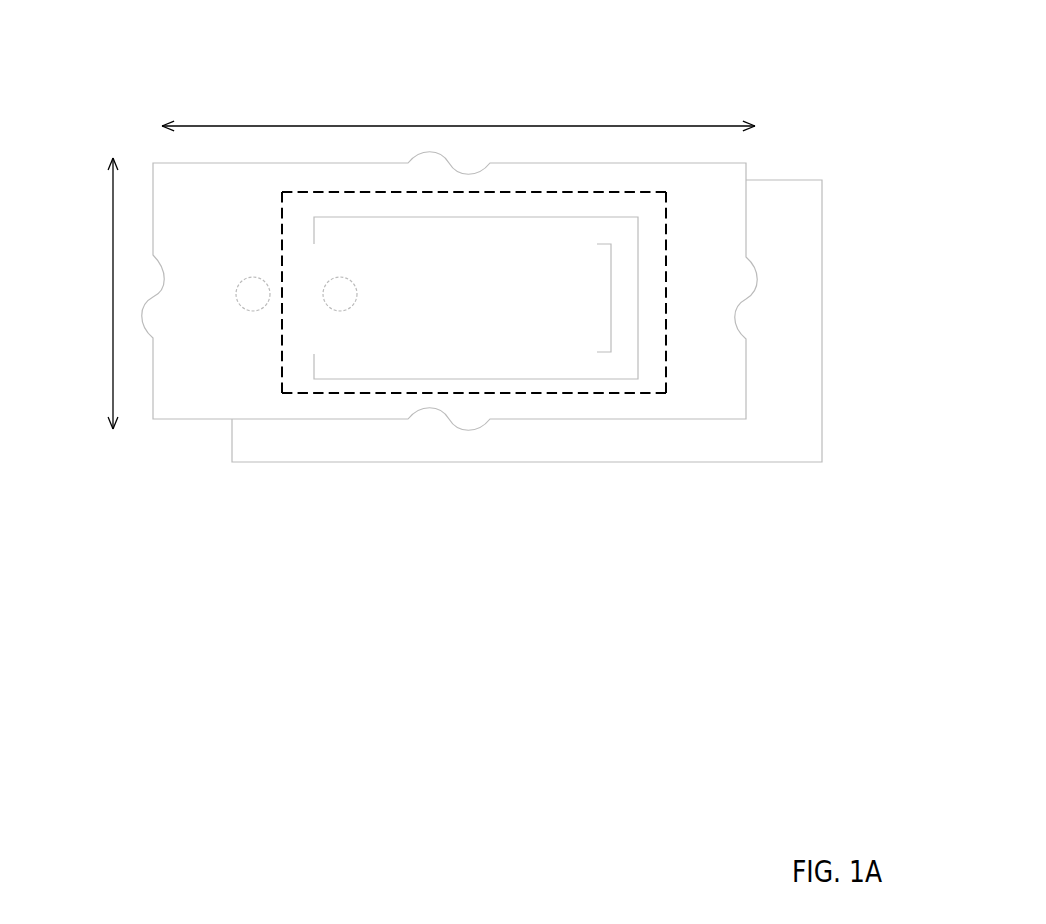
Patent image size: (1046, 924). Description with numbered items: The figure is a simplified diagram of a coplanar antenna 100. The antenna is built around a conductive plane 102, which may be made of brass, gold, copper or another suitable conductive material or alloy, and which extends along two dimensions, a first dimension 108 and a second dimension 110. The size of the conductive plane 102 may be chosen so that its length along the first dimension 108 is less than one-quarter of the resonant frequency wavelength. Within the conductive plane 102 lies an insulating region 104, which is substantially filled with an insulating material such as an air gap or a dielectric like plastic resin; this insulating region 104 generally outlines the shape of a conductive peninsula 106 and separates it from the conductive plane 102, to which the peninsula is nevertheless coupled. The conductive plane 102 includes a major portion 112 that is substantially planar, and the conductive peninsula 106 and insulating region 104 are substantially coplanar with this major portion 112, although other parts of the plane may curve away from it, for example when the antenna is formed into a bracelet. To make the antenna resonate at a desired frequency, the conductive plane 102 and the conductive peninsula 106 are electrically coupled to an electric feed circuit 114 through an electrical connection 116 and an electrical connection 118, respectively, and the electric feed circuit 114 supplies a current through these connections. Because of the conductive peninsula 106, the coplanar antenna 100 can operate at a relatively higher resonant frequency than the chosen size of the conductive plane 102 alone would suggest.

The coplanar antenna 100 is at (688, 68).
The conductive plane 102 is at (682, 261).
The insulating region 104 is at (620, 379).
The conductive peninsula 106 is at (444, 310).
The first dimension 108 is at (444, 135).
The second dimension 110 is at (113, 293).
The major portion 112 is at (316, 394).
The electric feed circuit 114 is at (782, 355).
The electrical connection 116 is at (253, 267).
The electrical connection 118 is at (343, 267).